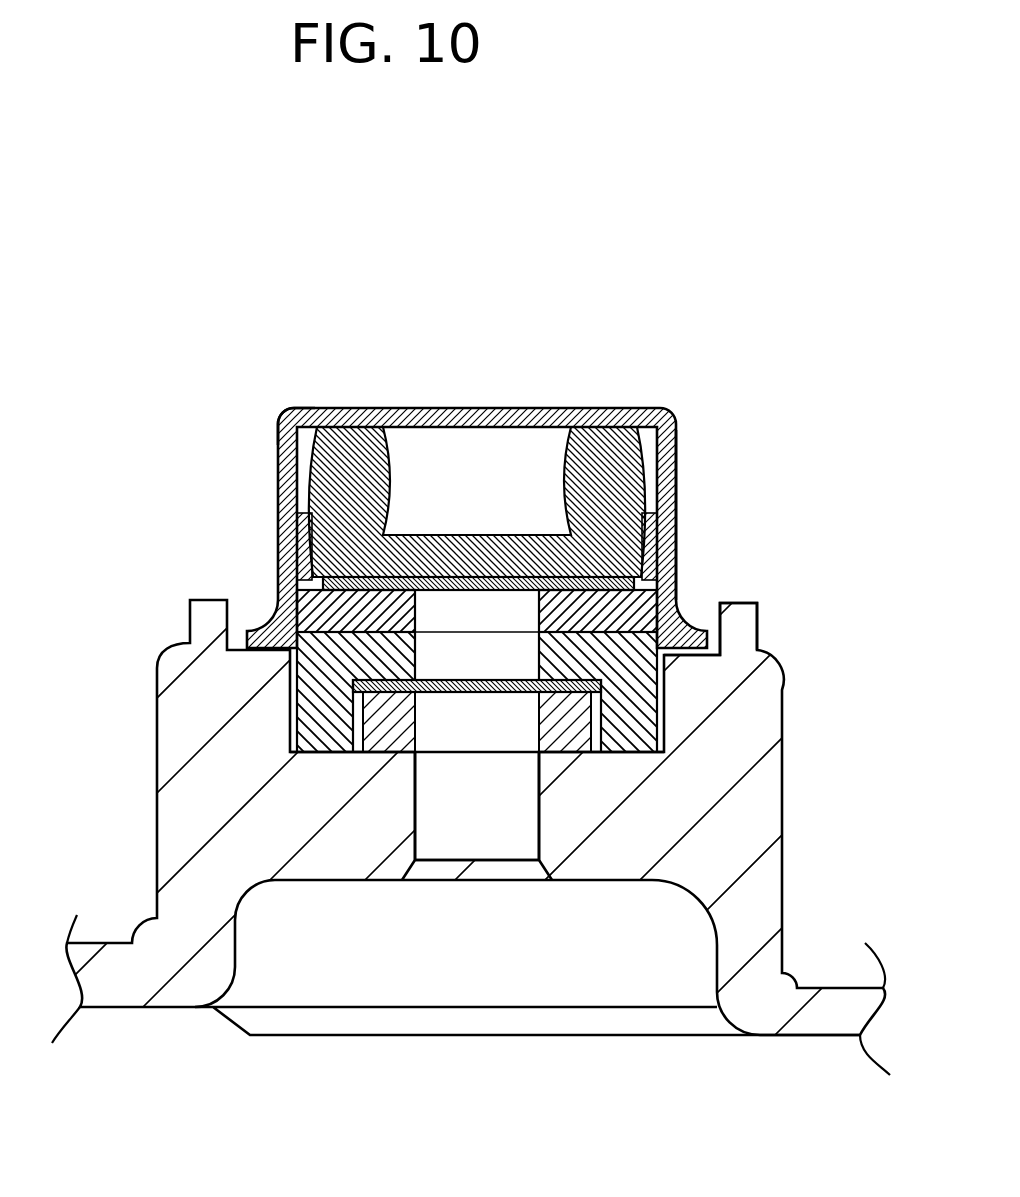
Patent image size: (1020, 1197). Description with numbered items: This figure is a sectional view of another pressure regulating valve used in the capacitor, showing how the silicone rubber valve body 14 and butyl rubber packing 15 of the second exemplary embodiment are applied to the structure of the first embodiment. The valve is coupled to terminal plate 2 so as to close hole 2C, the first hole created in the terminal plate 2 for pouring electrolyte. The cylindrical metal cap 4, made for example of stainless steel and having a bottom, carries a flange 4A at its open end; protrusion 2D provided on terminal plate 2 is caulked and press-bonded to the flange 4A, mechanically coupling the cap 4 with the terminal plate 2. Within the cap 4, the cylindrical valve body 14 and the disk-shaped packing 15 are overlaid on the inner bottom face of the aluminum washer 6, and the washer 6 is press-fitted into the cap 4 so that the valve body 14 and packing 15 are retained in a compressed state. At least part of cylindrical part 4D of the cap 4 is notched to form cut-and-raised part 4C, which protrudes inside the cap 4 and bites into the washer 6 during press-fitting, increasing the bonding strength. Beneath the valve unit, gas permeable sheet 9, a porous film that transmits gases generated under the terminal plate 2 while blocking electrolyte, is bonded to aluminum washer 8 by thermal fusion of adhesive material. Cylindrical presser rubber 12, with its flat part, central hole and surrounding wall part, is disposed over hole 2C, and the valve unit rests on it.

The terminal plate 2 is at (118, 780).
The hole 2C is at (500, 845).
The protrusion 2D is at (742, 603).
The cap 4 is at (339, 395).
The flange 4A is at (287, 418).
The cut-and-raised part 4C is at (284, 527).
The cylindrical part 4D is at (678, 478).
The washer 6 is at (297, 600).
The washer 8 is at (383, 735).
The gas permeable sheet 9 is at (466, 692).
The presser rubber 12 is at (628, 745).
The valve body 14 is at (600, 450).
The packing 15 is at (677, 543).